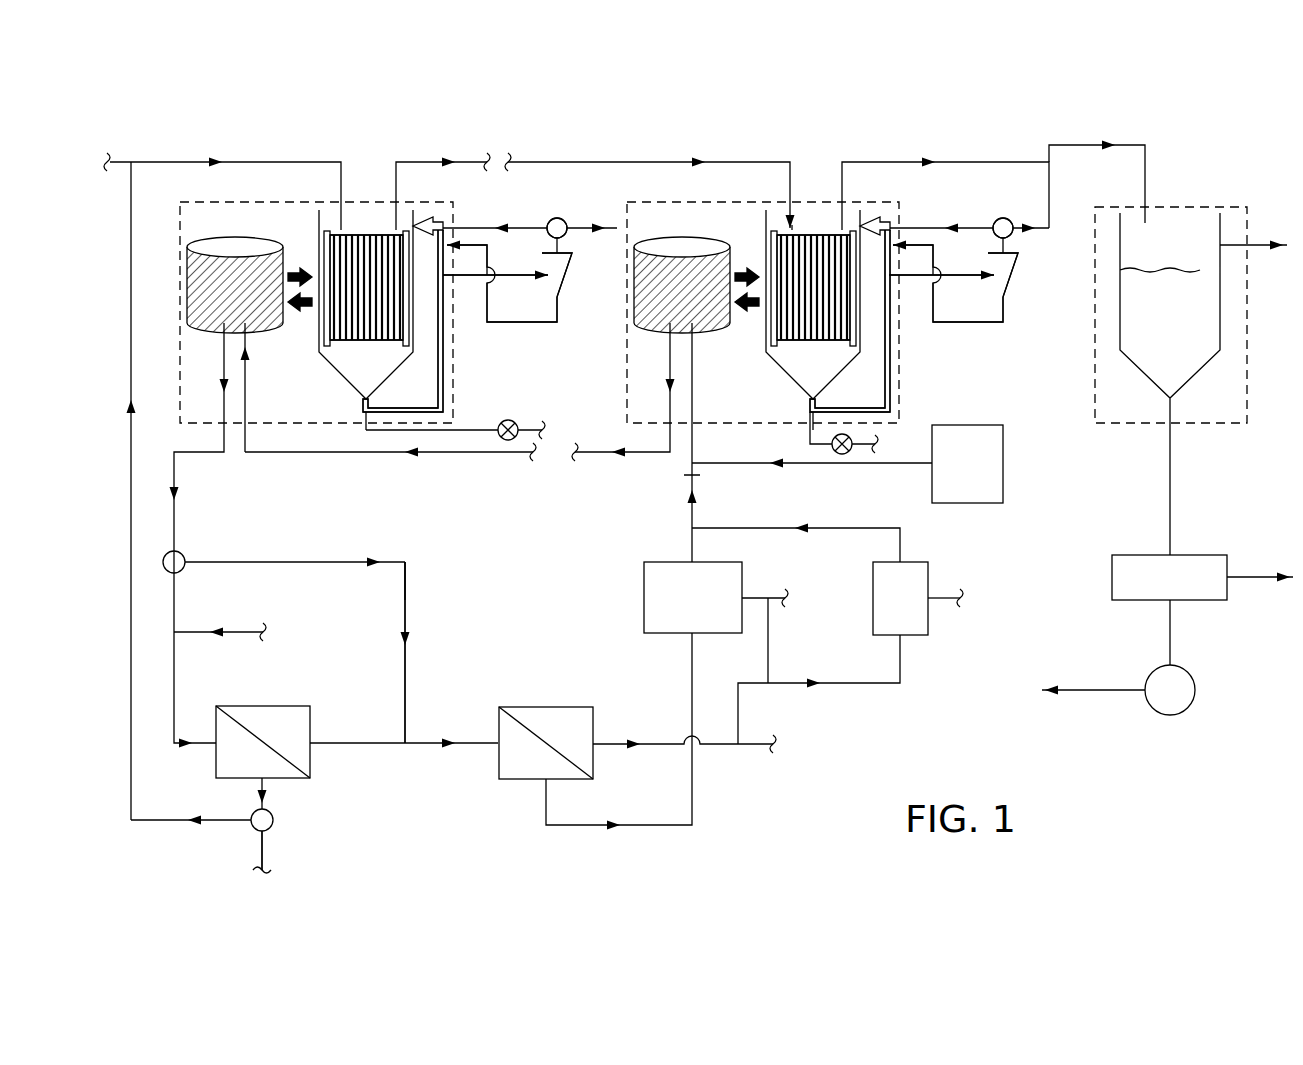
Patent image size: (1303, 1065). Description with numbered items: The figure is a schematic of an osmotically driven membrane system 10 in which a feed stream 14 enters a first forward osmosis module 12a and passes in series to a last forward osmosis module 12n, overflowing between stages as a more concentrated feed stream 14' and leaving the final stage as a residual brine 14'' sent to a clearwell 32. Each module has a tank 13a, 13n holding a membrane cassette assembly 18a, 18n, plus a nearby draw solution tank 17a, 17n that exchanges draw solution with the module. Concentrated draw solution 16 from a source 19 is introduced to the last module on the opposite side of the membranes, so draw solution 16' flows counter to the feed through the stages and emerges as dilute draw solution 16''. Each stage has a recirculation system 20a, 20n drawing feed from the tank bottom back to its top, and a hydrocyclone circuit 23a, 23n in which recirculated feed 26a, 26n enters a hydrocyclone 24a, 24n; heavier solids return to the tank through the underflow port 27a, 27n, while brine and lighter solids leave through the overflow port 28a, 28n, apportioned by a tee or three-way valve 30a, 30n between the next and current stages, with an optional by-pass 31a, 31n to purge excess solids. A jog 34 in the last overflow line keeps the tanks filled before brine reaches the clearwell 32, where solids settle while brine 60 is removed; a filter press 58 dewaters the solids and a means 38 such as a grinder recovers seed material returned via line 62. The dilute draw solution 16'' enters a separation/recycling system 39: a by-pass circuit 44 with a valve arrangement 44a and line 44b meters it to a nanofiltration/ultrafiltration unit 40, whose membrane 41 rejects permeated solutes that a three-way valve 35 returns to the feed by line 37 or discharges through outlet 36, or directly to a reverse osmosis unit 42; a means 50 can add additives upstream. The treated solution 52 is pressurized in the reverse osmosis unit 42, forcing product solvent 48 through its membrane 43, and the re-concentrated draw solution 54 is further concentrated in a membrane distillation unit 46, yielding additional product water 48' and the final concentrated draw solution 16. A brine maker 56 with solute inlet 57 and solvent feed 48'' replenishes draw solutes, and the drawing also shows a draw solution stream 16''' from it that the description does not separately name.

The osmotically driven membrane system 10 is at (446, 112).
The feed stream 14 is at (218, 473).
The overflow feed line 14' is at (595, 183).
The concentrated feed stream 14'' is at (945, 183).
The jog 34 is at (1049, 145).
The first forward osmosis module 12a is at (360, 205).
The last forward osmosis module 12n is at (805, 205).
The tank 13a is at (319, 324).
The tank 13n is at (764, 240).
The draw solution tank 17a is at (236, 238).
The draw solution tank 17n is at (700, 330).
The membrane cassette assembly 18a is at (337, 345).
The membrane cassette assembly 18n is at (784, 345).
The recirculation system 20a is at (443, 375).
The recirculation system 20n is at (889, 375).
The hydrocyclone circuit 23a is at (530, 259).
The hydrocyclone circuit 23n is at (976, 259).
The hydrocyclone 24a is at (569, 266).
The hydrocyclone 24n is at (1013, 266).
The recirculated feed 26a is at (507, 283).
The recirculated feed 26n is at (954, 283).
The underflow port 27a is at (557, 308).
The underflow port 27n is at (1014, 312).
The overflow port 28a is at (562, 238).
The overflow port 28n is at (1008, 238).
The three-way valve 30a is at (548, 222).
The three-way valve 30n is at (990, 221).
The by-pass 31a is at (514, 421).
The by-pass 31n is at (862, 433).
The clearwell 32 is at (1205, 207).
The brine 60 is at (1266, 608).
The filter press 58 is at (1140, 553).
The means for recovering seed material 38 is at (1148, 710).
The line 62 is at (1093, 680).
The concentrated draw solution 16 is at (781, 442).
The concentrated draw solution 16' is at (458, 403).
The dilute draw solution 16'' is at (308, 535).
The product stream branch 16''' is at (796, 543).
The source of concentrated draw solution 19 is at (963, 503).
The by-pass circuit 44 is at (397, 553).
The by-pass valve arrangement 44a is at (182, 570).
The by-pass line 44b is at (405, 590).
The means for introducing additives 50 is at (232, 633).
The nanofiltration/ultrafiltration unit 40 is at (310, 760).
The NF/UF membrane 41 is at (251, 740).
The reverse osmosis unit 42 is at (517, 706).
The membrane 43 is at (532, 735).
The dilute draw solution 52 is at (418, 745).
The re-concentrated draw solution 54 is at (692, 772).
The product solvent 48 is at (697, 745).
The additional product water 48' is at (779, 636).
The solvent 48'' is at (819, 689).
The membrane distillation unit 46 is at (644, 581).
The brine maker 56 is at (911, 610).
The means for introducing draw solutes 57 is at (958, 599).
The three-way valve 35 is at (274, 823).
The outlet 36 is at (259, 865).
The line 37 is at (156, 823).
The separation/recycling system 39 is at (446, 830).